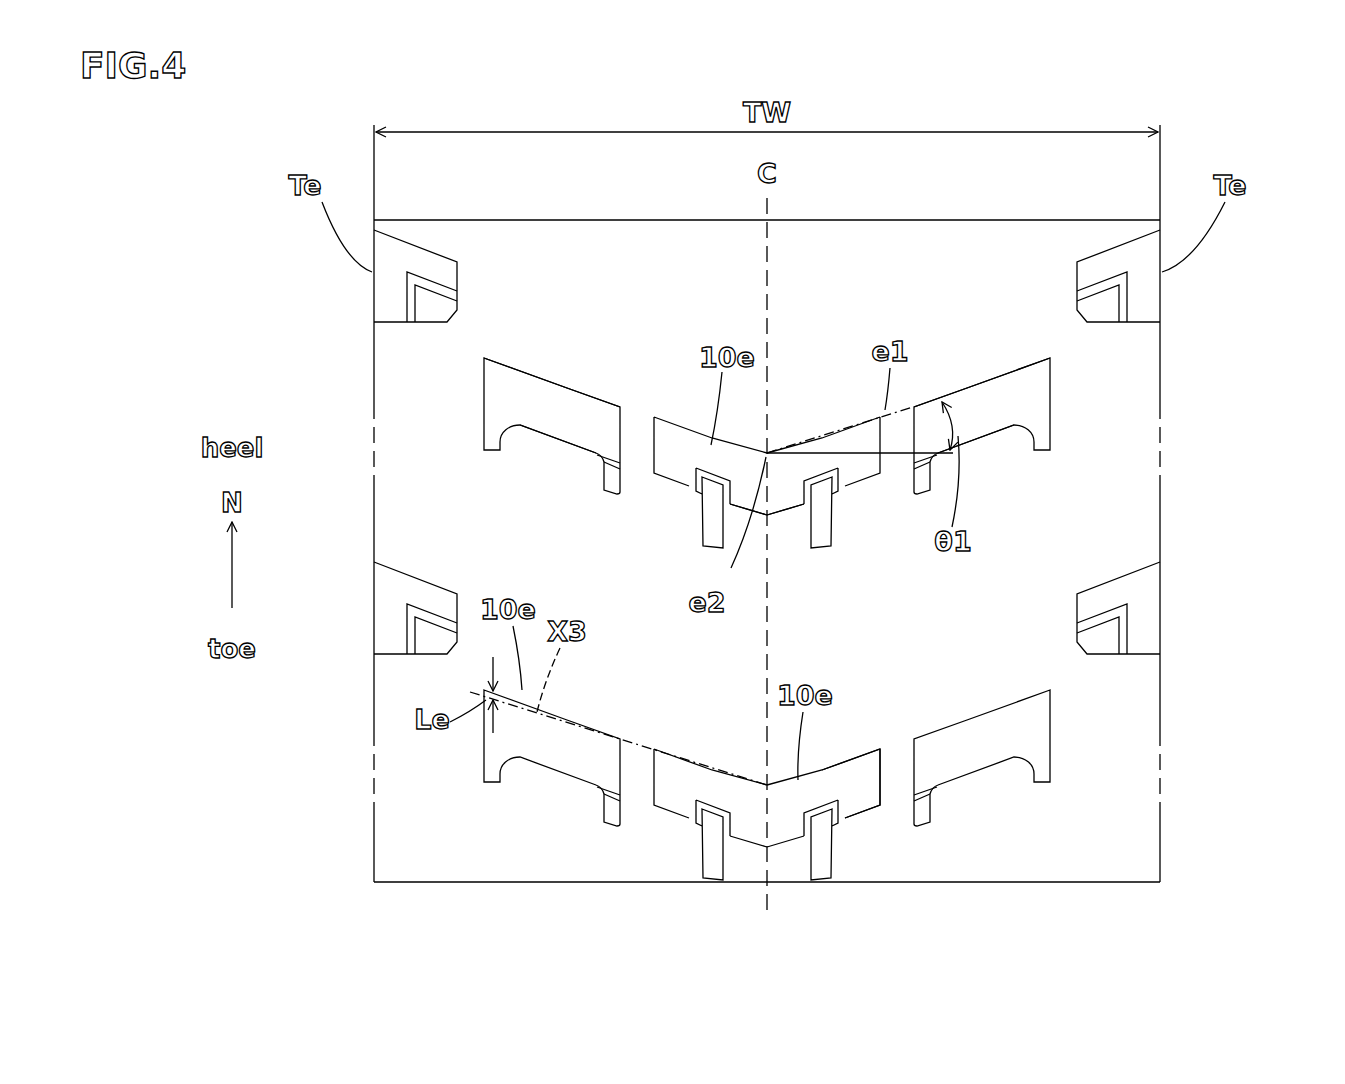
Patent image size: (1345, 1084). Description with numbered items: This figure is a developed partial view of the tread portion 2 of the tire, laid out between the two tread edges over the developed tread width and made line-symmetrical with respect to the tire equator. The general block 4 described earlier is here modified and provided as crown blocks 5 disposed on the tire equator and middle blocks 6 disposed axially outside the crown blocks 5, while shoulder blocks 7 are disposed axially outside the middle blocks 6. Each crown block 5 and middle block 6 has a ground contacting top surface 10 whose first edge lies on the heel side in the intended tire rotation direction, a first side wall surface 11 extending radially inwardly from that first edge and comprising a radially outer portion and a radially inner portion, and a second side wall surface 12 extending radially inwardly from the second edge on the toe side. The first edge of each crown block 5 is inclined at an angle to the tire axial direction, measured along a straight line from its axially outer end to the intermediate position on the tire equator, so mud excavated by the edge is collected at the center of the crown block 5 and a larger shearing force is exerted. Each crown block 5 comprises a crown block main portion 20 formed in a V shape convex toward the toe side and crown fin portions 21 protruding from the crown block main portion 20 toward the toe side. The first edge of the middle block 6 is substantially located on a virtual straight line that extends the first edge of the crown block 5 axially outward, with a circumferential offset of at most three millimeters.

The tread portion 2 is at (1274, 186).
The block 4 is at (541, 318).
The crown block 5 is at (774, 637).
The middle block 6 is at (508, 358).
The shoulder block 7 is at (415, 265).
The ground contacting top surface 10 is at (557, 405).
The first side wall surface 11 is at (598, 395).
The second side wall surface 12 is at (557, 432).
The crown block main portion 20 is at (858, 792).
The crown fin portion 21 is at (712, 857).